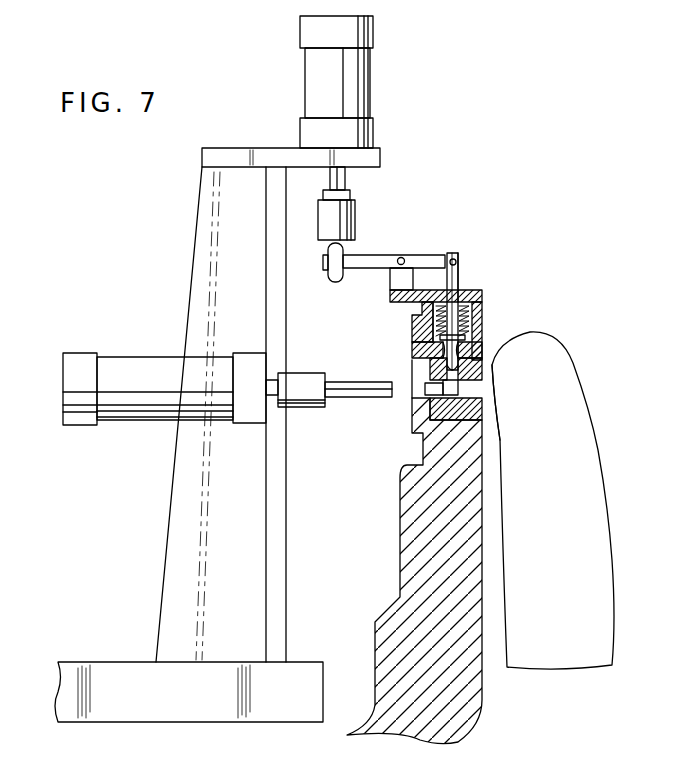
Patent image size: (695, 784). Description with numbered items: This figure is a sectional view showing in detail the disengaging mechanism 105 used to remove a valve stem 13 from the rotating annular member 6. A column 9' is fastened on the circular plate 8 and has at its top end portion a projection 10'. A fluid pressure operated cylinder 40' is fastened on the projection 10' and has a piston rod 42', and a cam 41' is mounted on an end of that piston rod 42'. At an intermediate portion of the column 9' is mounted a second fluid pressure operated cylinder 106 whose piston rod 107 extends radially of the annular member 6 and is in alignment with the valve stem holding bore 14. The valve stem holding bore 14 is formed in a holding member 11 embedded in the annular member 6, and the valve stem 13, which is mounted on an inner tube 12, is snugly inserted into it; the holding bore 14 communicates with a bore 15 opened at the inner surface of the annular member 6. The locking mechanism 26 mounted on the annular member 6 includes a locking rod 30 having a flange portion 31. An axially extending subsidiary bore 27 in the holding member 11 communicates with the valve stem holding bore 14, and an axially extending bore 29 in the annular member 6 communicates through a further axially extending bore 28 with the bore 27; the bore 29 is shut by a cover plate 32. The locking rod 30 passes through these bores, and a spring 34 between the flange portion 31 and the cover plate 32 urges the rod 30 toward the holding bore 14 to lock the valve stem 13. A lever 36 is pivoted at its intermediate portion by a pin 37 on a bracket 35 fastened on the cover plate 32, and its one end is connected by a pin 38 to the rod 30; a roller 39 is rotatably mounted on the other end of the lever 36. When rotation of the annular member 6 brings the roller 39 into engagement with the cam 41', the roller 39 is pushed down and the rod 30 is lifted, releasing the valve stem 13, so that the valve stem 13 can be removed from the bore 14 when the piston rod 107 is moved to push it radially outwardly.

The fluid pressure operated cylinder 40' is at (313, 82).
The projection 10' is at (319, 157).
The piston rod 42' is at (317, 186).
The cam 41' is at (365, 210).
The roller 39 is at (338, 281).
The lever 36 is at (392, 255).
The pin 37 is at (401, 257).
The pin 38 is at (452, 253).
The bracket 35 is at (390, 284).
The cover plate 32 is at (400, 302).
The locking mechanism 26 is at (480, 280).
The spring 34 is at (470, 306).
The axially extending bore 29 is at (470, 320).
The locking rod 30 is at (462, 280).
The flange portion 31 is at (438, 341).
The axially extending bore 28 is at (438, 352).
The axially extending subsidiary bore 27 is at (470, 393).
The valve stem holding bore 14 is at (470, 386).
The bore 15 is at (412, 396).
The valve stem 13 is at (458, 420).
The annular member 6 is at (400, 534).
The inner tube 12 is at (590, 455).
The holding member 11 is at (494, 424).
The disengaging mechanism 105 is at (433, 190).
The column 9' is at (213, 414).
The fluid pressure operated cylinder 106 is at (140, 420).
The piston rod 107 is at (352, 400).
The circular plate 8 is at (120, 662).